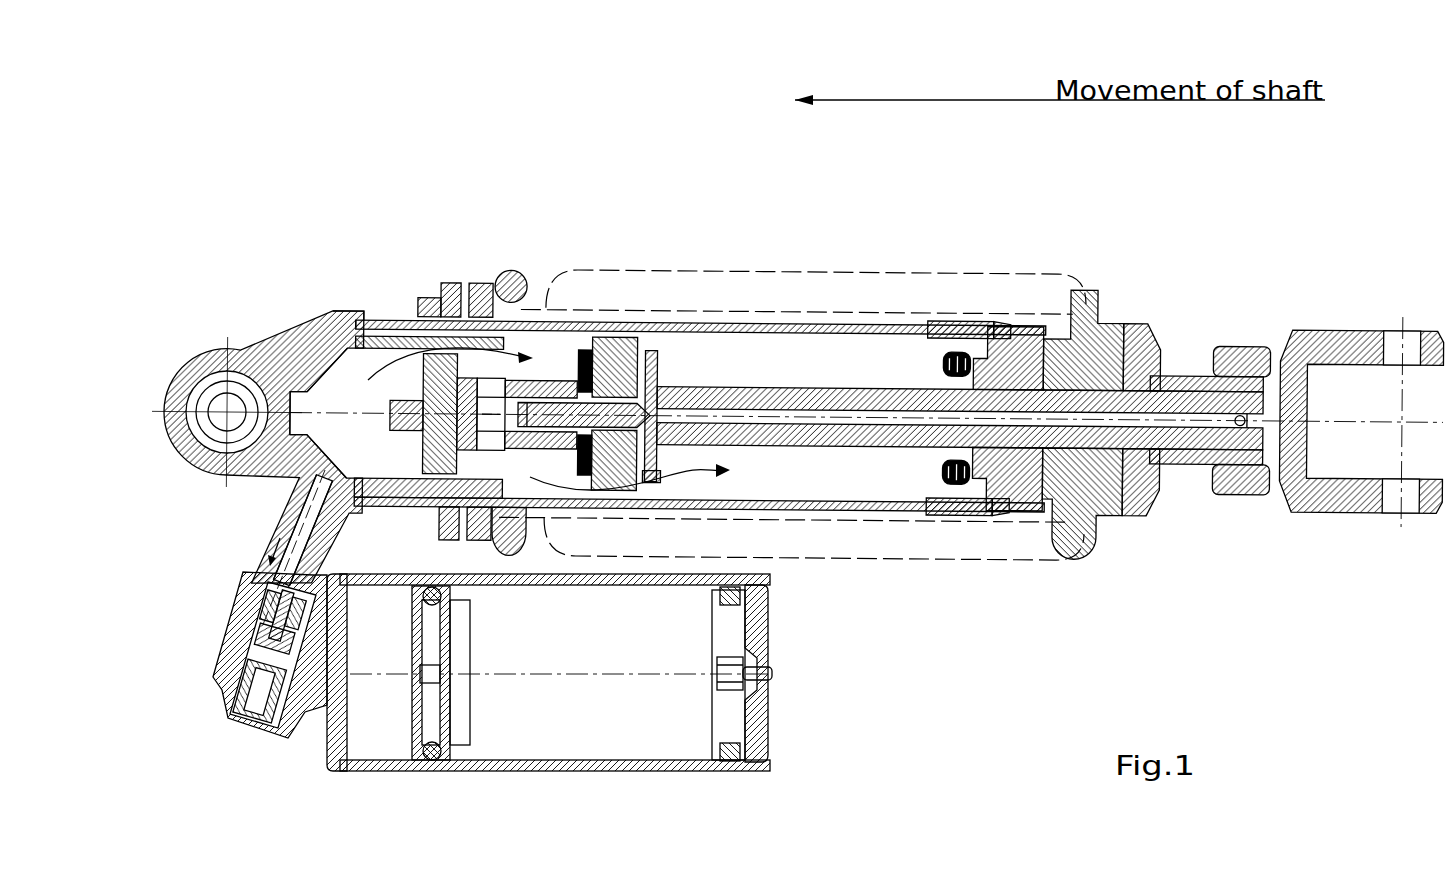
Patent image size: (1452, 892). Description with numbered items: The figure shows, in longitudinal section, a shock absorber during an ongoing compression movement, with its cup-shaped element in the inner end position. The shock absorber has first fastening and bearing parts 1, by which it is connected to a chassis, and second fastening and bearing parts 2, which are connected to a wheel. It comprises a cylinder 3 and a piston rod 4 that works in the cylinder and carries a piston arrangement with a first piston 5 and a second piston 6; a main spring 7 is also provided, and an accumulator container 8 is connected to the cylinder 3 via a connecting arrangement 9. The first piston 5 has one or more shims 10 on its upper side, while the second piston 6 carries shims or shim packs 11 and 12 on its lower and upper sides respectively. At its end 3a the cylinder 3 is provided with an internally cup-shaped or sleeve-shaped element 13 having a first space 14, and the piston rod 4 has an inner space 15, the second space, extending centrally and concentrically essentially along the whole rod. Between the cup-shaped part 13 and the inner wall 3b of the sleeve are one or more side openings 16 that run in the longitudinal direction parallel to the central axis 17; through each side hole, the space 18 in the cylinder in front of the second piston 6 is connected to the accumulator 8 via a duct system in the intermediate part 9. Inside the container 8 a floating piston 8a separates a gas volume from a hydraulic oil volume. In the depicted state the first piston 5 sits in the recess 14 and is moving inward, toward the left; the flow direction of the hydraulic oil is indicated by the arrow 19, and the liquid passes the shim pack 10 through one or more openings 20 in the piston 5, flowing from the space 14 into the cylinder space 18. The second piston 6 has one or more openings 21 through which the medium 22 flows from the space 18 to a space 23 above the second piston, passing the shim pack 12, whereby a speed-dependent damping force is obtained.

The first fastening and bearing parts 1 is at (258, 289).
The second fastening and bearing parts 2 is at (1182, 583).
The cylinder 3 is at (797, 512).
The end of the cylinder 3a is at (301, 280).
The inner wall of the sleeve 3b is at (870, 336).
The piston rod 4 is at (707, 376).
The first piston 5 is at (418, 338).
The second piston 6 is at (612, 350).
The main spring 7 is at (1070, 547).
The accumulator container 8 is at (565, 758).
The floating piston 8a is at (413, 766).
The connecting arrangement 9 is at (242, 536).
The shim 10 is at (505, 545).
The shims or shim pack 11 is at (585, 395).
The shims or shim pack 12 is at (642, 337).
The cup-shaped element 13 is at (466, 300).
The first space 14 is at (369, 443).
The inner space 15 is at (788, 388).
The side openings 16 is at (497, 338).
The central axis 17 is at (904, 418).
The space in the cylinder 18 is at (554, 352).
The arrow 19 is at (358, 310).
The openings in the piston 20 is at (440, 378).
The openings 21 is at (702, 768).
The medium 22 is at (767, 622).
The space in the cylinder 23 is at (893, 470).